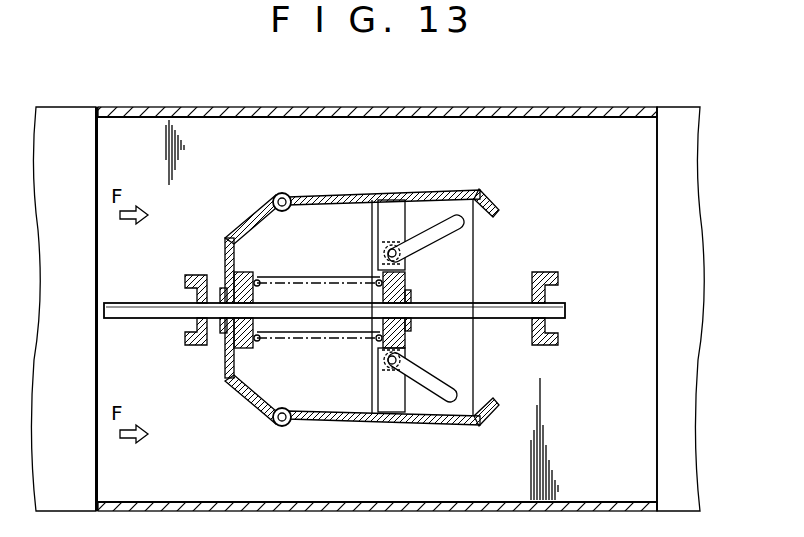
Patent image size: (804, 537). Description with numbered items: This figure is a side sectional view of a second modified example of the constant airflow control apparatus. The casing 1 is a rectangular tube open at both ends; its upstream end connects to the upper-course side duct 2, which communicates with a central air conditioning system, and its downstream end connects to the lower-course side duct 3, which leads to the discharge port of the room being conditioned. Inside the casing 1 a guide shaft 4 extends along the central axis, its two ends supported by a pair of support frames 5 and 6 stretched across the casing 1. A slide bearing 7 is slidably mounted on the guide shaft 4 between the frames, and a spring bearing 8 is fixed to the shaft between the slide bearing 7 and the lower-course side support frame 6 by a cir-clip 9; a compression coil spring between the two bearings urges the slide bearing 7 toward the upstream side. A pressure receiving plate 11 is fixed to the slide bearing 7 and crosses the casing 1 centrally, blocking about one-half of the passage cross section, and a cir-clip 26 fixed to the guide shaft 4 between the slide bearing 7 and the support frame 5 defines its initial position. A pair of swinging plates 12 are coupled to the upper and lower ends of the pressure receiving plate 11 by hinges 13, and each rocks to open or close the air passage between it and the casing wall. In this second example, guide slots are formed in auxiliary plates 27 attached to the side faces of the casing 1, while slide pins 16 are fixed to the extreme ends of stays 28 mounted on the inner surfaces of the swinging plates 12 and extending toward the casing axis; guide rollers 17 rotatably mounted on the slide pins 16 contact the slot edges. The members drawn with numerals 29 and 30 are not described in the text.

The casing 1 is at (221, 107).
The upper-course side duct 2 is at (67, 112).
The lower-course side duct 3 is at (672, 114).
The guide shaft 4 is at (132, 320).
The support frame 5 is at (195, 275).
The support frame 6 is at (548, 272).
The slide bearing 7 is at (245, 272).
The spring bearing 8 is at (408, 282).
The cir-clip 9 is at (409, 323).
The pressure receiving plate 11 is at (240, 233).
The swinging plate 12 is at (328, 197).
The hinge 13 is at (278, 194).
The slide pin 16 is at (382, 255).
The guide roller 17 is at (386, 243).
The cir-clip 26 is at (221, 335).
The auxiliary plate 27 is at (463, 284).
The stay 28 is at (390, 214).
The link 29 is at (437, 222).
The rod 30 is at (312, 274).